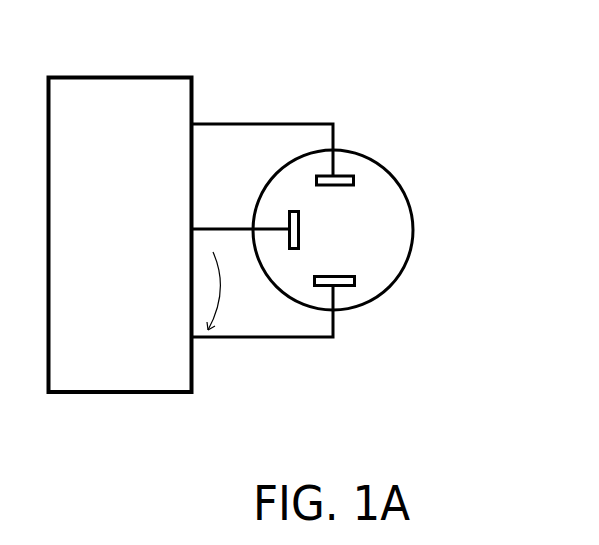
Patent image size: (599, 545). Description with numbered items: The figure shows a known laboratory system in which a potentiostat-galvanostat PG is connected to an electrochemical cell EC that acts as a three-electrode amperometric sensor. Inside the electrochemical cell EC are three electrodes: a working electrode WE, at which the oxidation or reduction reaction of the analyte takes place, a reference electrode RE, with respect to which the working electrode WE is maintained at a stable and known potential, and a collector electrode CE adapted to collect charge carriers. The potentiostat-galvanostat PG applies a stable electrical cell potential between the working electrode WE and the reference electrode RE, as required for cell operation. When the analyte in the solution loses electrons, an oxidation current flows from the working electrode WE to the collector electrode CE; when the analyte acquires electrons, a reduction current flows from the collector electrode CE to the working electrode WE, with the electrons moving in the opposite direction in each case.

The potentiostat-galvanostat PG is at (120, 235).
The electrochemical cell EC is at (393, 223).
The collector electrode CE is at (339, 194).
The reference electrode RE is at (308, 230).
The working electrode WE is at (336, 271).